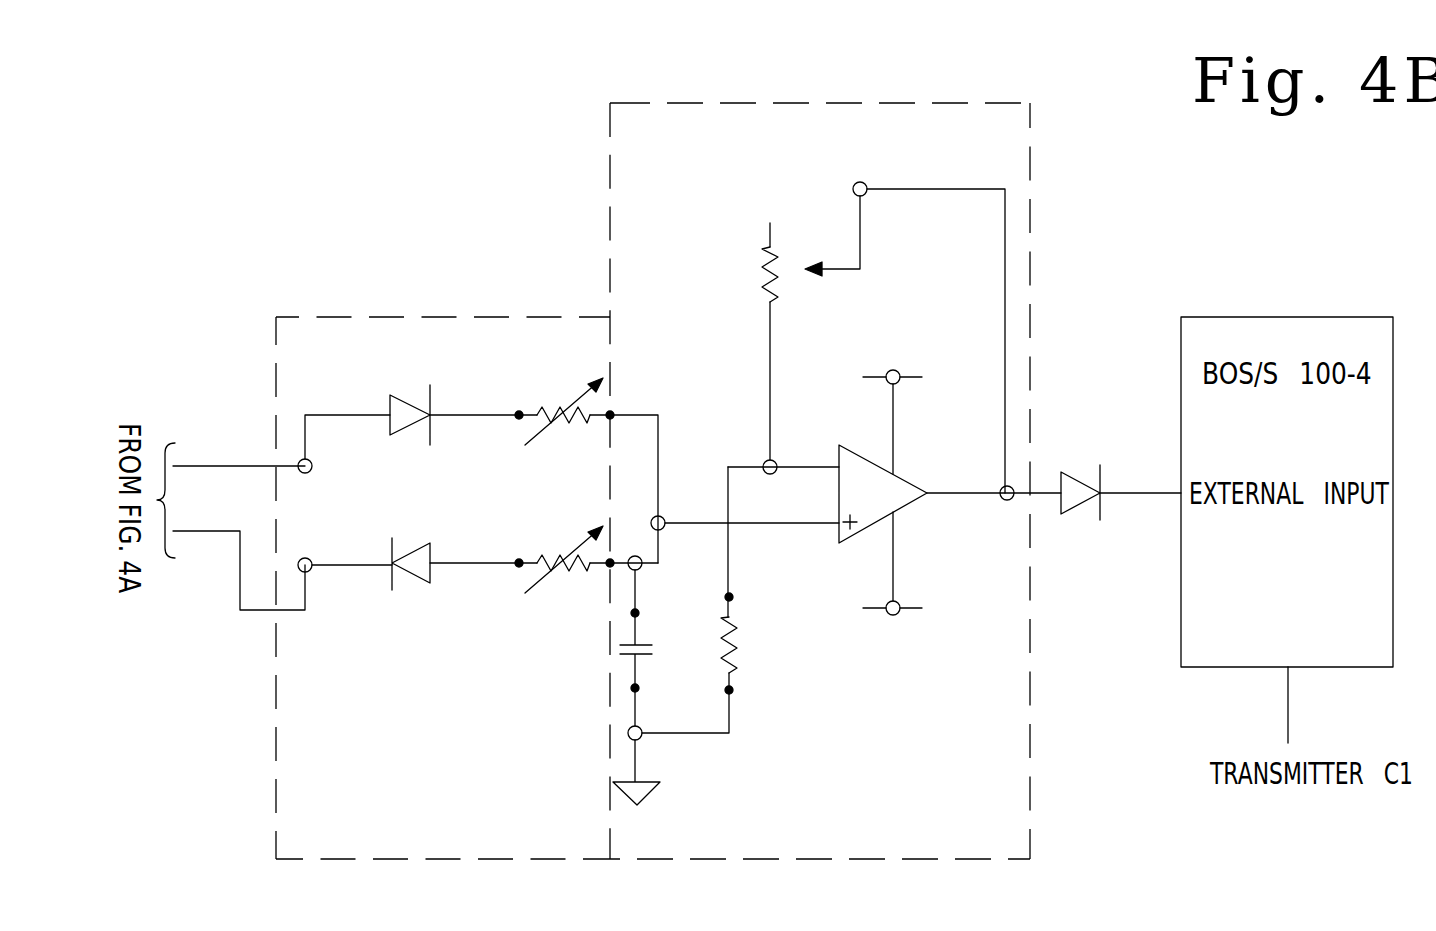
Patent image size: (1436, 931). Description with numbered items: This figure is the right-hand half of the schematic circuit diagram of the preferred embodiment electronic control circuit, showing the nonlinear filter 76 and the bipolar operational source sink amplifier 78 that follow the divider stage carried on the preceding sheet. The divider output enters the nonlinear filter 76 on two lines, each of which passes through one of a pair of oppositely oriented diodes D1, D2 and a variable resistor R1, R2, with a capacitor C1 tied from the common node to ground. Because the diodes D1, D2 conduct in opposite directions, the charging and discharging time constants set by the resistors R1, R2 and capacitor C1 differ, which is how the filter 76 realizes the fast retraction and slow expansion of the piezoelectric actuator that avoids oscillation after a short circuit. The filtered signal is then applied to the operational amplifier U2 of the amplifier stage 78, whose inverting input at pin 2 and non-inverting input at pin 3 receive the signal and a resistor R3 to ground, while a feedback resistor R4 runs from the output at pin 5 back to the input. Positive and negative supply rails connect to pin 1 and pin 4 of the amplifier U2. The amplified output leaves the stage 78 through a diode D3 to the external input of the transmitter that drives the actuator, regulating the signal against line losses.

The nonlinear filter 76 is at (479, 588).
The bipolar operational source sink amplifier 78 is at (835, 481).
The diode D1 is at (416, 416).
The diode D2 is at (416, 566).
The diode IN4001 D3 is at (1106, 493).
The variable resistor 1K R1 is at (564, 413).
The variable resistor 10K R2 is at (564, 563).
The resistor R3 is at (753, 646).
The resistor 10K R4 is at (792, 261).
The capacitor C1 is at (635, 648).
The operational amplifier LF355 U2 is at (920, 475).
The op-amp pin 1 (+15V supply) 1 is at (892, 422).
The op-amp pin 2 (inverting input) 2 is at (783, 451).
The op-amp pin 3 (non-inverting input) 3 is at (752, 508).
The op-amp pin 4 (-15V supply) 4 is at (892, 563).
The op-amp pin 5 (output) 5 is at (994, 481).